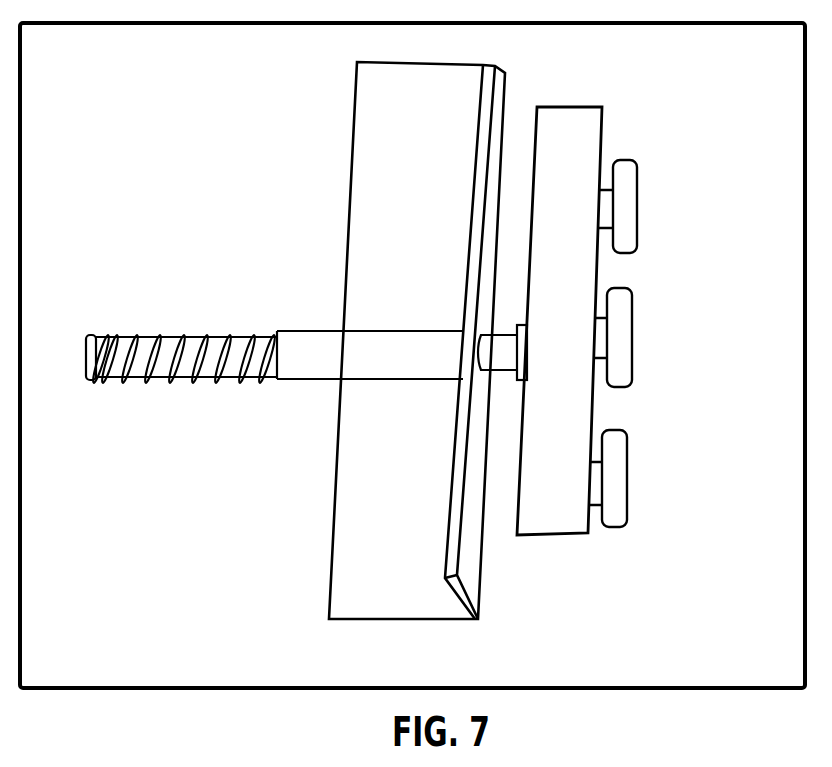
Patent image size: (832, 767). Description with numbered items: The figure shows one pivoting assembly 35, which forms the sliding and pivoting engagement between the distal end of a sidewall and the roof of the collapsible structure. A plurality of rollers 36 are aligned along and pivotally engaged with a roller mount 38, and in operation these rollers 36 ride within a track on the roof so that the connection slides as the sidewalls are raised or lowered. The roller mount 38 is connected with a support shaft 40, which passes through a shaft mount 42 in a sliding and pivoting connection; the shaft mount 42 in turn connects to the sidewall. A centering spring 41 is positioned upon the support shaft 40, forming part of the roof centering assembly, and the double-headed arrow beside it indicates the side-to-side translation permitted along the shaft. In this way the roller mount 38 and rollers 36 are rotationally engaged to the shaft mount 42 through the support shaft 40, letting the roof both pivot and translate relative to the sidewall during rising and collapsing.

The pivoting assembly 35 is at (208, 168).
The rollers 36 is at (625, 220).
The roller mount 38 is at (578, 117).
The support shaft 40 is at (205, 370).
The centering spring 41 is at (114, 324).
The shaft mount 42 is at (393, 606).